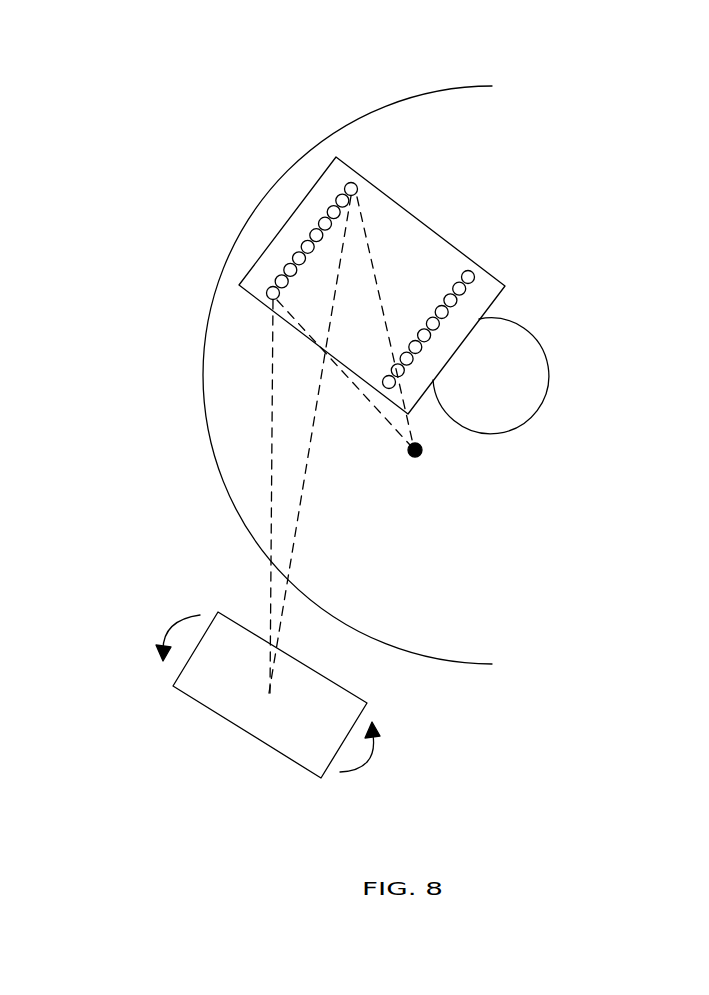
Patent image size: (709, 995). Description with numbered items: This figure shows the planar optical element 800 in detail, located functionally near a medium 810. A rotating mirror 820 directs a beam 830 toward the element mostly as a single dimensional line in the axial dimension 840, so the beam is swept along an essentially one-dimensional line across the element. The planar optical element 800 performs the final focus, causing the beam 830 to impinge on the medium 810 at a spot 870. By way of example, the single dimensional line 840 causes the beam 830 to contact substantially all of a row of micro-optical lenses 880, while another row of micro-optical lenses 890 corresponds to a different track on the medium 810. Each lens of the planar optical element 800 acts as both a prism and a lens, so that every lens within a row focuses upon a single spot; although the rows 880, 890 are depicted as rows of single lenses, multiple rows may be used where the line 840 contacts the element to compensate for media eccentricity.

The planar optical element 800 is at (285, 221).
The medium 810 is at (243, 420).
The rotating mirror 820 is at (345, 708).
The beam 830 is at (268, 589).
The single dimensional line in the axial dimension 840 is at (322, 212).
The spot 870 is at (418, 457).
The row of micro-optical lenses 880 is at (361, 181).
The row of micro-optical lenses 890 is at (476, 270).